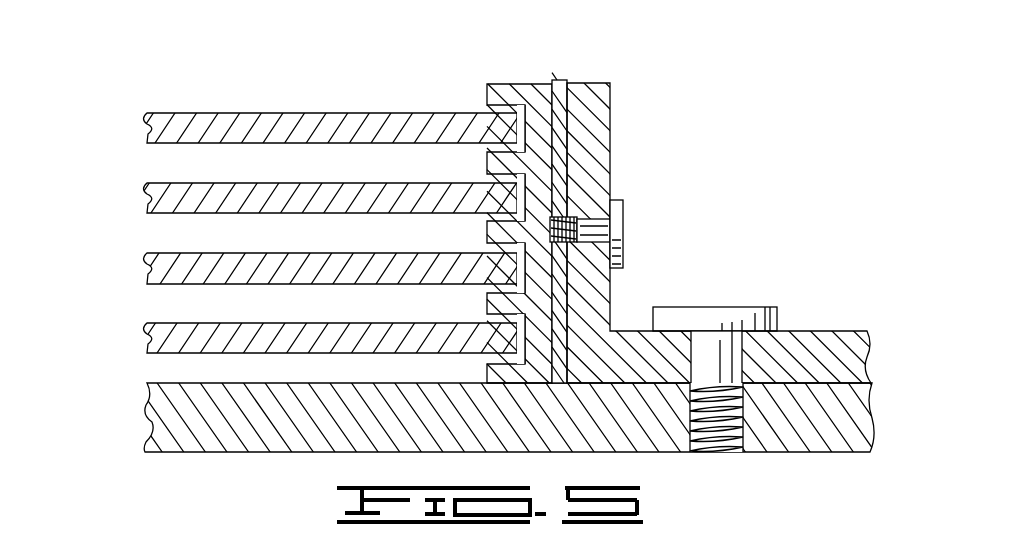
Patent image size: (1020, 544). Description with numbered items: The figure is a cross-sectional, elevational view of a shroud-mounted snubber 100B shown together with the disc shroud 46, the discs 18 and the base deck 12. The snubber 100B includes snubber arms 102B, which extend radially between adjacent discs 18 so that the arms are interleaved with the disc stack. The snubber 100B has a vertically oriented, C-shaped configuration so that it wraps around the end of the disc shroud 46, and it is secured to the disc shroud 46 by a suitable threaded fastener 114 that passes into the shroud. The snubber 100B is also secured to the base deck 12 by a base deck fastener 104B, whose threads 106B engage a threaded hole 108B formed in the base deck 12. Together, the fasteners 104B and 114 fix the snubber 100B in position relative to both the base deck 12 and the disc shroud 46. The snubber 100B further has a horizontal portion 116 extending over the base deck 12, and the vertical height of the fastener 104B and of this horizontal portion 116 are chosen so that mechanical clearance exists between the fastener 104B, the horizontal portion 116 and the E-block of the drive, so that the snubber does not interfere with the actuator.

The base deck 12 is at (147, 388).
The discs 18 is at (147, 340).
The disc shroud 46 is at (557, 93).
The snubber 100B is at (607, 274).
The snubber arms 102B is at (487, 373).
The base deck fastener 104B is at (685, 322).
The threads 106B is at (775, 453).
The threaded hole 108B is at (720, 462).
The threaded fastener 114 is at (617, 233).
The horizontal portion 116 is at (810, 335).